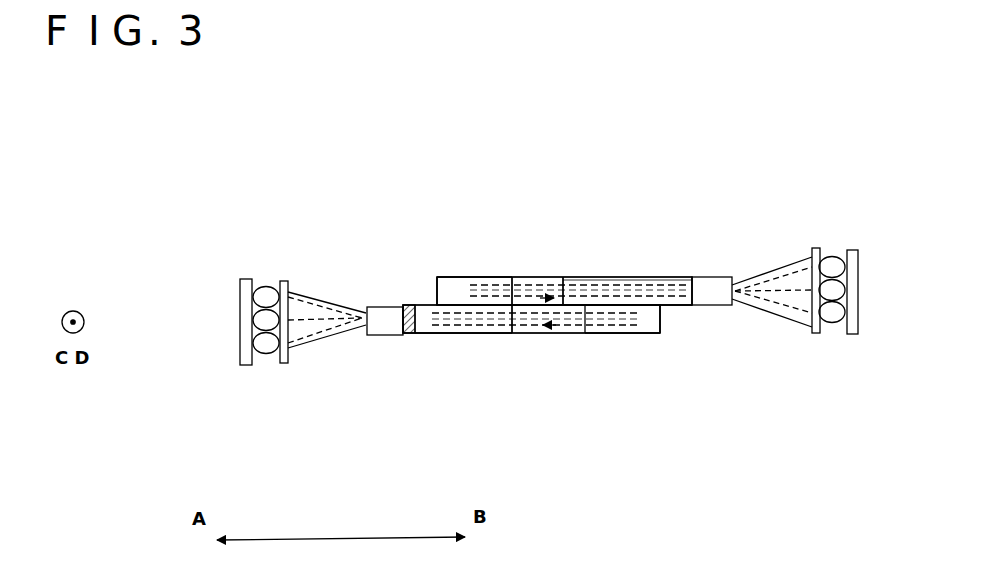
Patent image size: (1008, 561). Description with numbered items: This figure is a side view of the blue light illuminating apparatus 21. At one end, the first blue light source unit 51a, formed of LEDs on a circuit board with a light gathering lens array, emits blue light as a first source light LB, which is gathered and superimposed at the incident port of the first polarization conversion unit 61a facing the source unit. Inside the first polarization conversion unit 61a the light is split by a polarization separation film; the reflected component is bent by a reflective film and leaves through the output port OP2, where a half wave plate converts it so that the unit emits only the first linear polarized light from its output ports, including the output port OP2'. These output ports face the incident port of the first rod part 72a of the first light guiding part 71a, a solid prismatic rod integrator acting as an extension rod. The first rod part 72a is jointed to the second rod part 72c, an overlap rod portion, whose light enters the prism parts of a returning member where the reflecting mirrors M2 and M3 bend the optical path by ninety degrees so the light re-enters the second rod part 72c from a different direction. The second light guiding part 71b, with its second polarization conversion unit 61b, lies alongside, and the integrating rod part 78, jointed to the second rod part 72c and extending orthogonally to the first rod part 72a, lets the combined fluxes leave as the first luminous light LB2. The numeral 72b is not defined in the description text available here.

The blue light illuminating apparatus 21 is at (888, 110).
The first blue light source unit 51a is at (262, 372).
The first polarization conversion unit 61a is at (360, 346).
The second polarization conversion unit 61b is at (708, 270).
The first light guiding part 71a is at (513, 402).
The second light guiding part 71b is at (600, 218).
The first rod part 72a is at (470, 277).
The light guide end section 72b is at (627, 334).
The second rod part 72c is at (563, 277).
The integrating rod part 78 is at (603, 285).
The reflecting mirror M2 is at (437, 282).
The reflecting mirror M3 is at (577, 277).
The first source light LB is at (312, 296).
The first luminous light LB2 is at (527, 277).
The output port OP2 is at (383, 356).
The output port OP2' is at (416, 370).